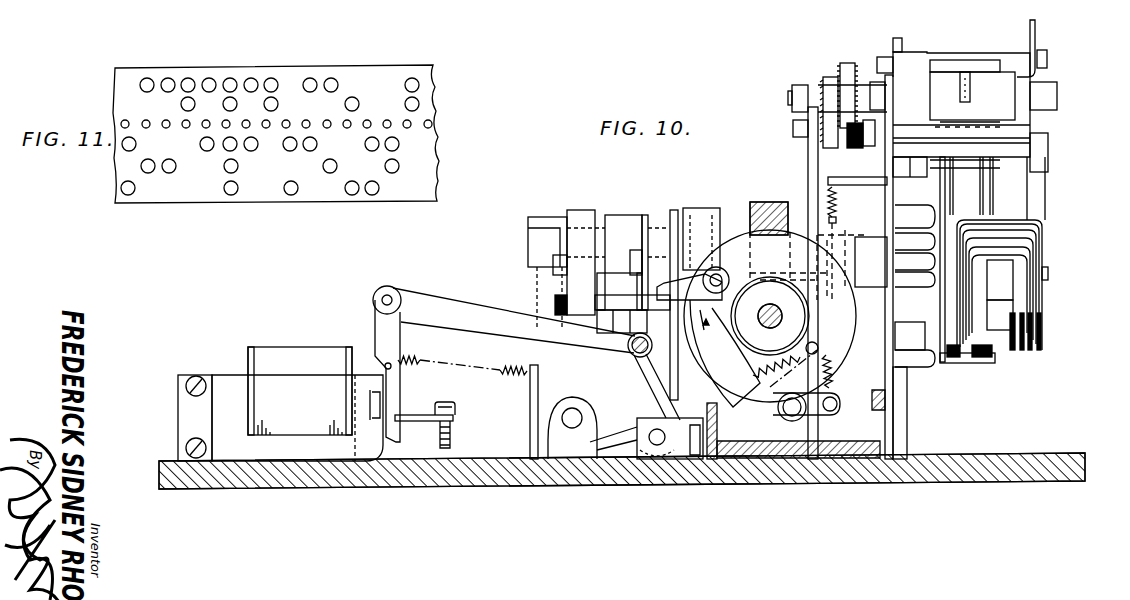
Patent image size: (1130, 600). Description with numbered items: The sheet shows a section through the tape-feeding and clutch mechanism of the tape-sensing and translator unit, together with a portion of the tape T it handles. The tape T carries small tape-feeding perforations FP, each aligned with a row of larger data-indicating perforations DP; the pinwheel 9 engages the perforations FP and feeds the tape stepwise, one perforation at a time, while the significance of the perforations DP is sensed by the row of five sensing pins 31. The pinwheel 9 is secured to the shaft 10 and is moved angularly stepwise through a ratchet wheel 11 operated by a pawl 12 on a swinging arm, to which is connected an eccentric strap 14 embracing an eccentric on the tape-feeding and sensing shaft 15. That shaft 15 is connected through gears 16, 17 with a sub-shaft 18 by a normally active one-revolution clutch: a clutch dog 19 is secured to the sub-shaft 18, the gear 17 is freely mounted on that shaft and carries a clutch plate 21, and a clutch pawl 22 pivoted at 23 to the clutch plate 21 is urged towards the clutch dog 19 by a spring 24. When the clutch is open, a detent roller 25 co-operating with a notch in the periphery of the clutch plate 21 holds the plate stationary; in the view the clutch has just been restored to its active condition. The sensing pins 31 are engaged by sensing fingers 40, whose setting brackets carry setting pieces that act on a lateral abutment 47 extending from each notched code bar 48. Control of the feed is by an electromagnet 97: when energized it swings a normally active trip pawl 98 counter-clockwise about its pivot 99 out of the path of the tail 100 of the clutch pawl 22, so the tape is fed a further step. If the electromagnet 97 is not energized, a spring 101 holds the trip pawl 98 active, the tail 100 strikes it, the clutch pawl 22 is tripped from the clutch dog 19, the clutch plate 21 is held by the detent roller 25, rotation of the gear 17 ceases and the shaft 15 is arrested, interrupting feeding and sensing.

In FIG. 10, the pinwheel 9 is at (970, 80).
In FIG. 10, the shaft 10 is at (788, 98).
In FIG. 10, the ratchet wheel 11 is at (831, 74).
In FIG. 10, the pawl 12 is at (833, 138).
In FIG. 10, the eccentric strap 14 is at (810, 197).
In FIG. 10, the tape-feeding and sensing shaft 15 is at (722, 230).
In FIG. 10, the gear 16 is at (765, 212).
In FIG. 10, the gear 17 is at (792, 305).
In FIG. 10, the sub-shaft 18 is at (783, 326).
In FIG. 10, the clutch dog 19 is at (785, 320).
In FIG. 10, the clutch plate 21 is at (782, 418).
In FIG. 10, the clutch pawl 22 is at (735, 405).
In FIG. 10, the pivot 23 is at (710, 275).
In FIG. 10, the spring 24 is at (818, 362).
In FIG. 10, the detent roller 25 is at (800, 412).
In FIG. 10, the sensing pins 31 is at (997, 168).
In FIG. 10, the sensing fingers 40 is at (987, 197).
In FIG. 10, the lateral abutment 47 is at (1012, 322).
In FIG. 10, the notched code bars 48 is at (1038, 325).
In FIG. 10, the electromagnet 97 is at (297, 358).
In FIG. 10, the trip pawl 98 is at (640, 384).
In FIG. 10, the pivot 99 is at (660, 433).
In FIG. 10, the tail 100 is at (668, 290).
In FIG. 10, the spring 101 is at (513, 378).
In FIG. 11, the tape T is at (400, 188).
In FIG. 10, the tape T is at (998, 125).
In FIG. 11, the data-indicating perforations DP is at (228, 191).
In FIG. 11, the tape-feeding perforations FP is at (306, 128).